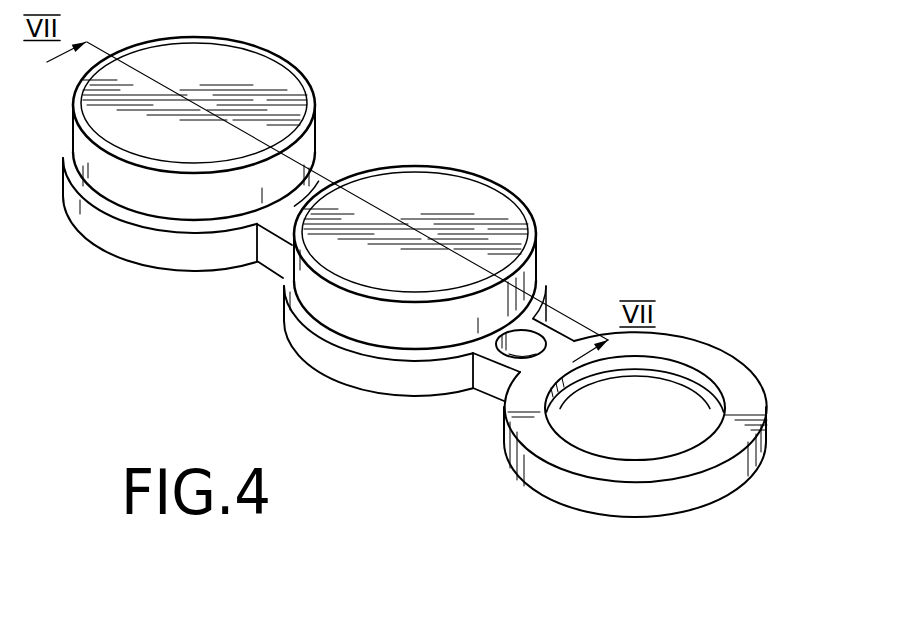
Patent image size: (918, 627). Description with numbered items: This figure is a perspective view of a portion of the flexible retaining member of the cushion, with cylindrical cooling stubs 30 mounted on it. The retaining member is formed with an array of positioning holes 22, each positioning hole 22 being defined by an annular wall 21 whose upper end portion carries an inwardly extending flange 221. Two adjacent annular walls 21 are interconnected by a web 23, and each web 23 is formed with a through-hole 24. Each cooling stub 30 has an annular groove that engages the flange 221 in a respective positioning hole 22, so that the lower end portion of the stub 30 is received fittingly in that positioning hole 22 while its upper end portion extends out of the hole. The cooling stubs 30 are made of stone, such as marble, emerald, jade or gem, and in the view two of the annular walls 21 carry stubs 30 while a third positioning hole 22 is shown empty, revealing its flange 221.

The cooling stub 30 is at (442, 156).
The annular wall 21 is at (363, 373).
The positioning hole 22 is at (688, 408).
The inwardly extending flange 221 is at (676, 343).
The web 23 is at (558, 342).
The through-hole 24 is at (531, 338).